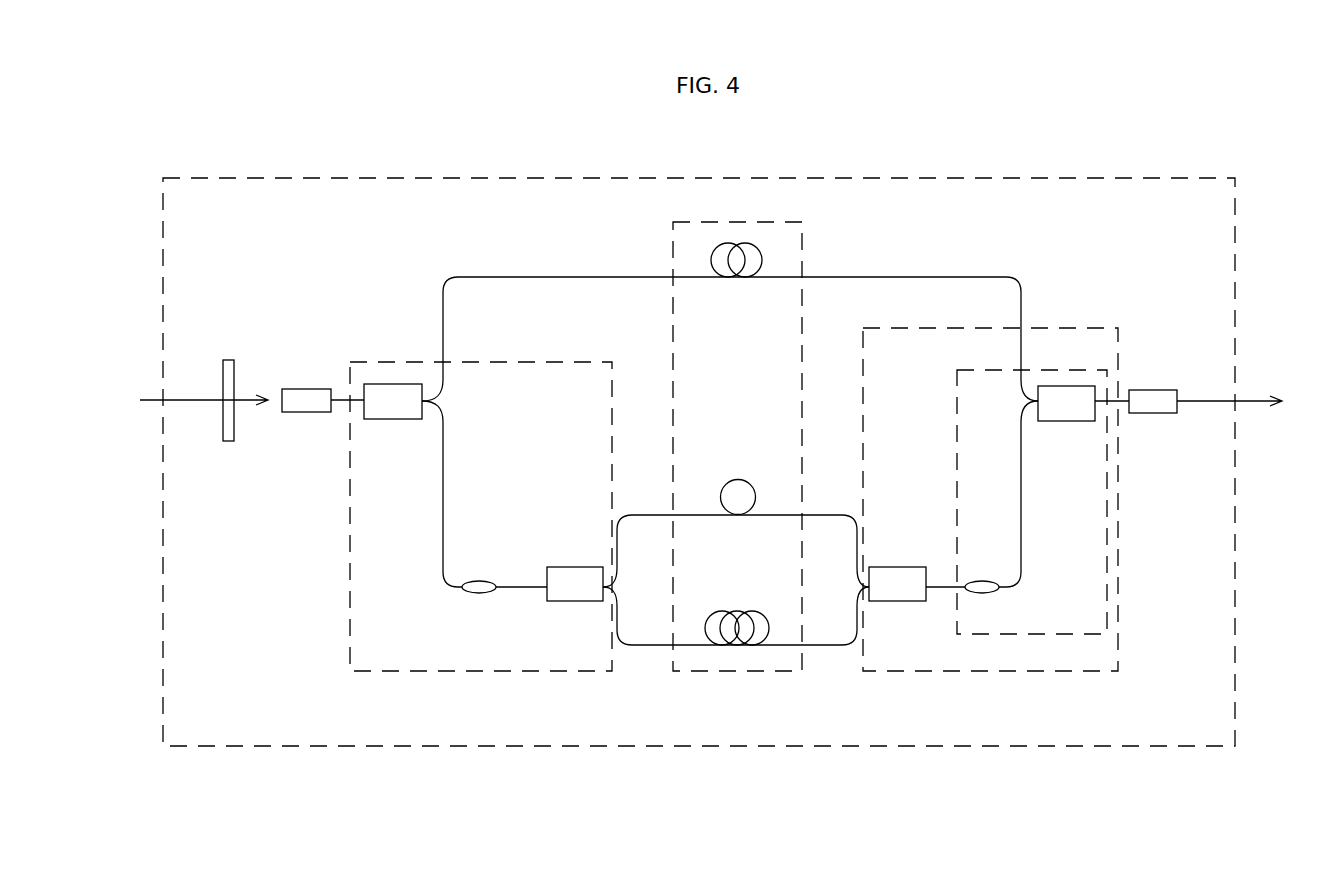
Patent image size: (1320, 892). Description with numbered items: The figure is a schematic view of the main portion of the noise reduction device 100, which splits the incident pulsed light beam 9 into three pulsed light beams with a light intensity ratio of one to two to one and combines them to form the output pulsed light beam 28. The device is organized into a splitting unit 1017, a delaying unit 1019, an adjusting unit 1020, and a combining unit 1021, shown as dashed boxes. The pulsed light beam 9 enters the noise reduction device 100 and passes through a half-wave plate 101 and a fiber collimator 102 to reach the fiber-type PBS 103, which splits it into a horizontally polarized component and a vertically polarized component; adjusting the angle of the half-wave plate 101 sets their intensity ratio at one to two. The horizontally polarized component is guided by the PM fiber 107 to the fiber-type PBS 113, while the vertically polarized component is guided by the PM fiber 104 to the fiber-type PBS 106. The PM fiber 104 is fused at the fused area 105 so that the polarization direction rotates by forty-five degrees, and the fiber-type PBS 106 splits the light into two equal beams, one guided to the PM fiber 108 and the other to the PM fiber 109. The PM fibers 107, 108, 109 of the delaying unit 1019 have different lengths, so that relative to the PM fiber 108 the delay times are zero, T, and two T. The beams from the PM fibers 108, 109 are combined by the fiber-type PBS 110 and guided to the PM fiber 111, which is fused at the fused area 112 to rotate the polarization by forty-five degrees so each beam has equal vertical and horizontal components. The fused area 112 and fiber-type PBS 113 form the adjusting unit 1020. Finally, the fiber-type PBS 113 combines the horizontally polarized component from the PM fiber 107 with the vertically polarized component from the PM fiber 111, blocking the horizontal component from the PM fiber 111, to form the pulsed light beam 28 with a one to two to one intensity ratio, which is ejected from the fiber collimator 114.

The pulsed light beam 9 is at (186, 398).
The pulsed light beam 28 is at (1203, 402).
The noise reduction device 100 is at (740, 746).
The half-wave plate 101 is at (229, 441).
The fiber collimator 102 is at (306, 412).
The fiber-type polarizing beam splitter 103 is at (392, 419).
The polarization-maintaining optical fiber 104 is at (443, 478).
The fused area 105 is at (479, 581).
The fiber-type polarizing beam splitter 106 is at (573, 566).
The polarization-maintaining optical fiber 107 is at (536, 277).
The polarization-maintaining optical fiber 108 is at (705, 517).
The polarization-maintaining optical fiber 109 is at (780, 644).
The fiber-type polarizing beam splitter 110 is at (899, 567).
The polarization-maintaining optical fiber 111 is at (936, 585).
The fused area 112 is at (982, 580).
The fiber-type polarizing beam splitter 113 is at (1066, 422).
The fiber collimator 114 is at (1155, 413).
The splitting unit 1017 is at (465, 672).
The delaying unit 1019 is at (802, 247).
The adjusting unit 1020 is at (957, 393).
The combining unit 1021 is at (1005, 672).